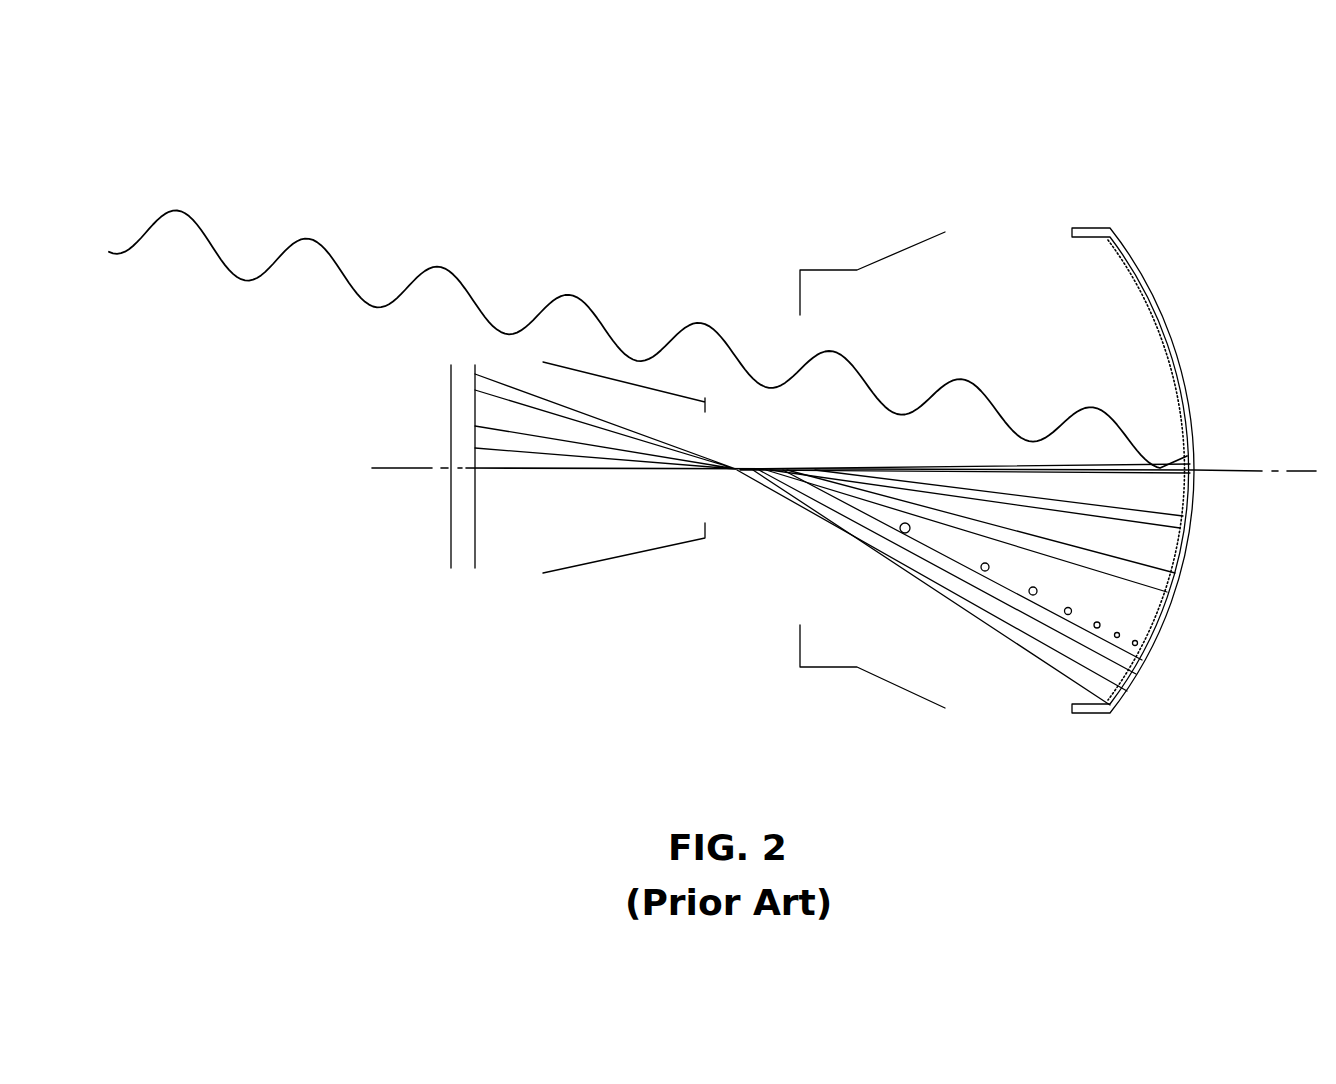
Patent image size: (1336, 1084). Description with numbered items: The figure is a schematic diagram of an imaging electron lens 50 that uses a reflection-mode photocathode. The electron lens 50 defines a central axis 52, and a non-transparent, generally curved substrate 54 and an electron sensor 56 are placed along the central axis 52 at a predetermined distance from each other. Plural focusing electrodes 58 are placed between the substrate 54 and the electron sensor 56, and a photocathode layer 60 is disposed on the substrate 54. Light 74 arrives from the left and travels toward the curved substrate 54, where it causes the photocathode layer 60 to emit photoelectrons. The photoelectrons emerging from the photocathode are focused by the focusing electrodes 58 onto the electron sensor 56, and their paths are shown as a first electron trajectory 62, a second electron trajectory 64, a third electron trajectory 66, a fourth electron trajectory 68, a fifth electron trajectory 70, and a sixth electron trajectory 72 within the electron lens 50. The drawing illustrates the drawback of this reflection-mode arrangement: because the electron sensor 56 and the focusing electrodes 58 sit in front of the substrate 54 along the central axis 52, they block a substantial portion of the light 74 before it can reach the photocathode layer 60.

The imaging electron lens 50 is at (455, 102).
The central axis 52 is at (404, 470).
The substrate 54 is at (1185, 380).
The electron sensor 56 is at (462, 518).
The focusing electrodes 58 is at (673, 396).
The photocathode layer 60 is at (1160, 327).
The first electron trajectory 62 is at (1053, 667).
The second electron trajectory 64 is at (1103, 660).
The third electron trajectory 66 is at (1093, 623).
The fourth electron trajectory 68 is at (1130, 578).
The fifth electron trajectory 70 is at (1000, 495).
The sixth electron trajectory 72 is at (907, 466).
The light 74 is at (351, 289).